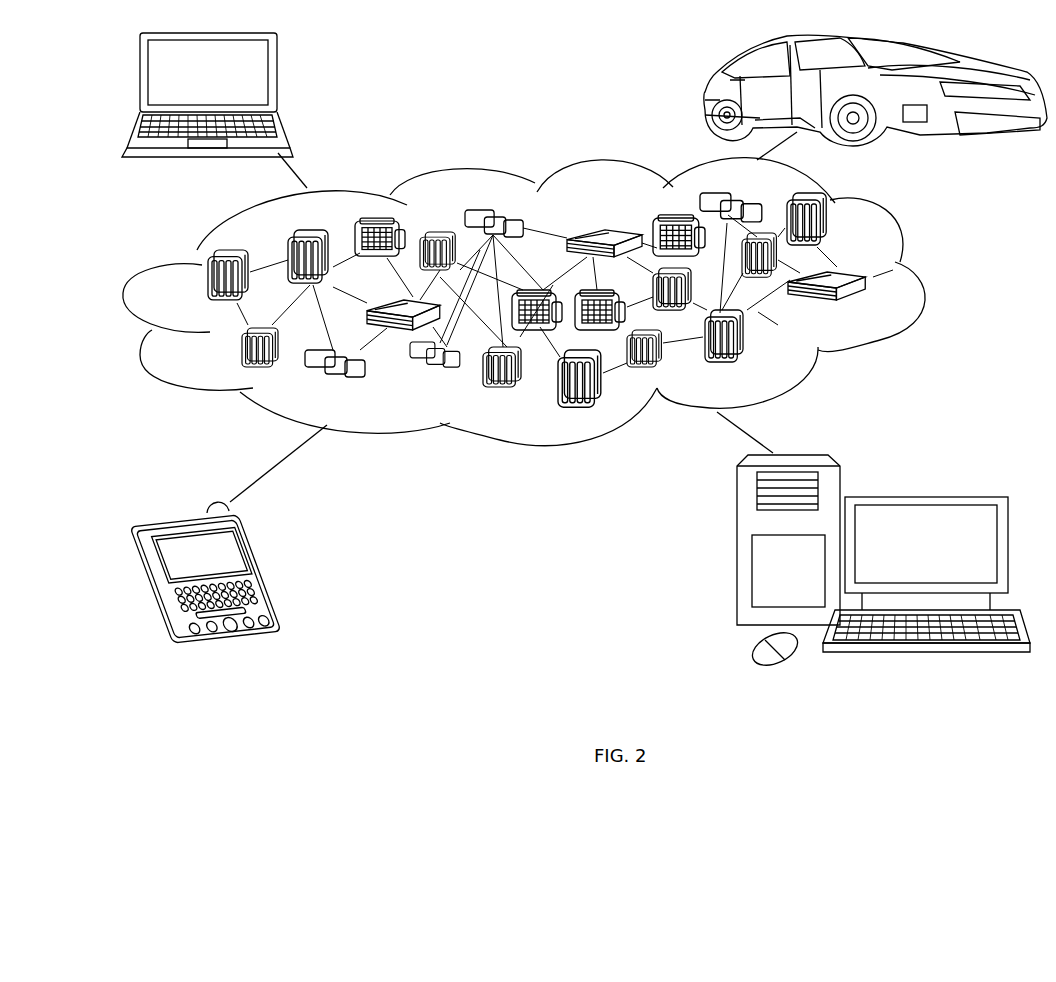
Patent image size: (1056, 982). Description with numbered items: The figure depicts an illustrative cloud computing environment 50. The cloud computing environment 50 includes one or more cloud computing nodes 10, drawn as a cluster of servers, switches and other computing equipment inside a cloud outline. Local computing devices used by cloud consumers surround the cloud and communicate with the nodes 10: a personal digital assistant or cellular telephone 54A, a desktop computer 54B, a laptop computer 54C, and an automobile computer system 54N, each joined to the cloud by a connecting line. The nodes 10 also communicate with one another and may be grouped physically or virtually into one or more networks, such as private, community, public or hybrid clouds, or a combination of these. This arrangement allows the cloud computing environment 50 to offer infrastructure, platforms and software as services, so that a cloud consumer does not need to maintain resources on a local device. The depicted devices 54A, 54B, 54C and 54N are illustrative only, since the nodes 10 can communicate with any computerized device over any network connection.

The cloud computing node 10 is at (884, 305).
The cloud computing environment 50 is at (927, 283).
The personal digital assistant or cellular telephone 54A is at (267, 568).
The desktop computer 54B is at (937, 480).
The laptop computer 54C is at (277, 82).
The automobile computer system 54N is at (707, 93).